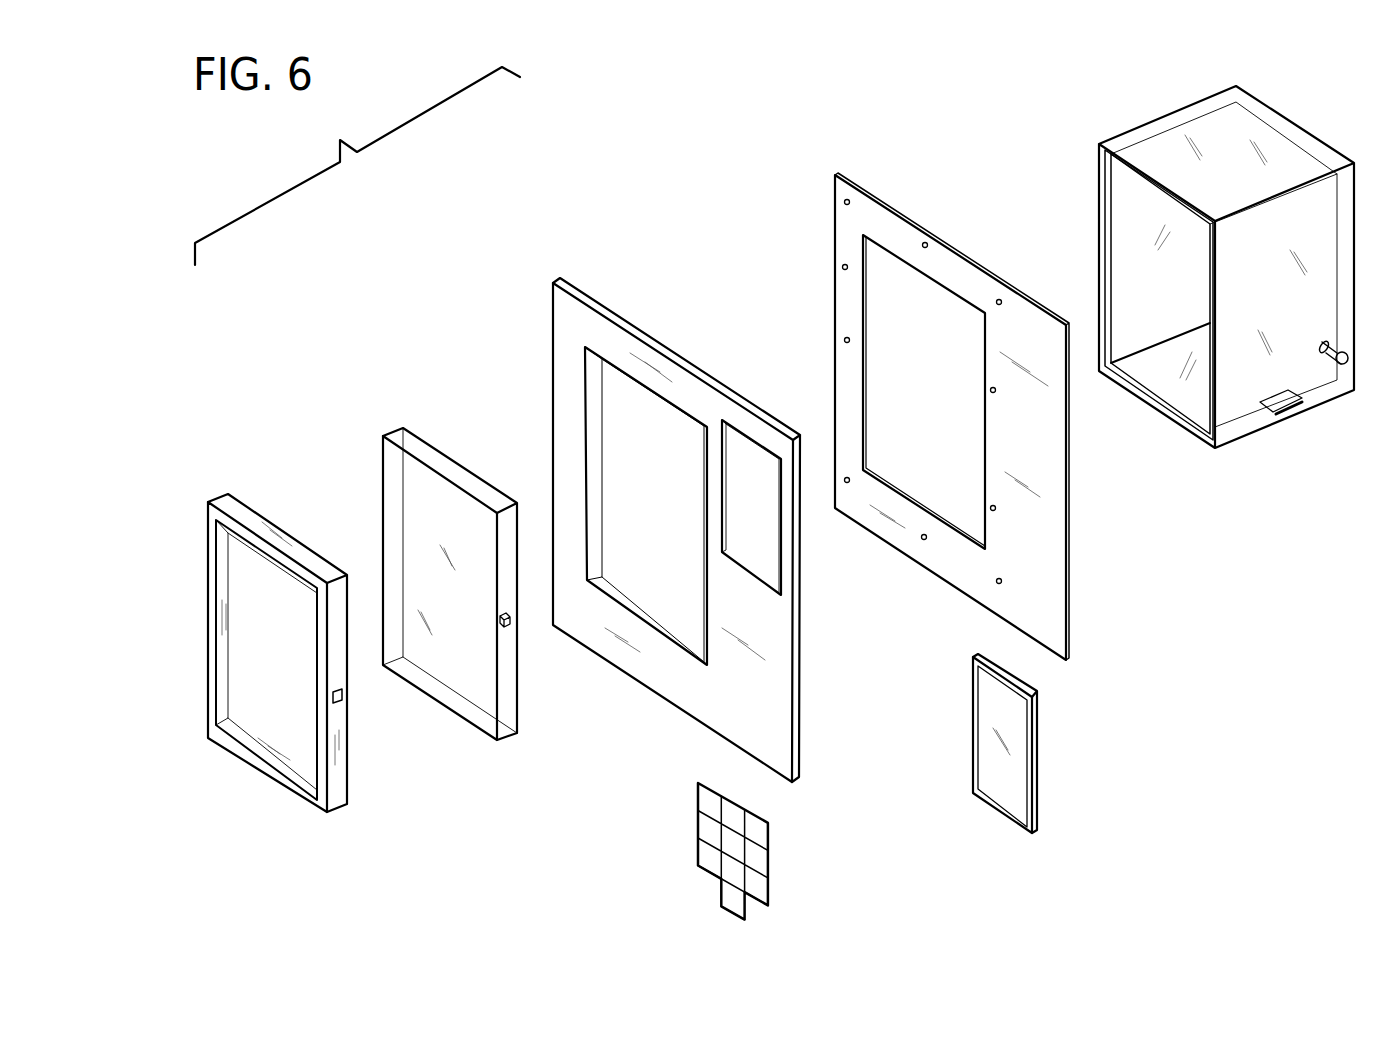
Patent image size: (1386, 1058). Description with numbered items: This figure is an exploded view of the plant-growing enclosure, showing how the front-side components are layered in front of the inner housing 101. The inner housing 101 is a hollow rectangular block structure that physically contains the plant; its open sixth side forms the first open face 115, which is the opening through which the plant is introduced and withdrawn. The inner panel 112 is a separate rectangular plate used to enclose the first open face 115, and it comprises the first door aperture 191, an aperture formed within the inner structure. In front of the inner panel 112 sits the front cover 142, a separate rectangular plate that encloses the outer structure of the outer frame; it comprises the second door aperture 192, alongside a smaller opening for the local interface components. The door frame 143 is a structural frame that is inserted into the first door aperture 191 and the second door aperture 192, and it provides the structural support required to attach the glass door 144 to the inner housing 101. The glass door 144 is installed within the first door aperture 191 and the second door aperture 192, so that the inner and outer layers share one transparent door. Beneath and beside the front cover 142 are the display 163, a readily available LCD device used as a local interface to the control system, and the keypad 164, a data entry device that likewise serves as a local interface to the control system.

The inner housing 101 is at (1226, 267).
The inner panel 112 is at (952, 380).
The first open face 115 is at (1152, 236).
The front cover 142 is at (676, 498).
The door frame 143 is at (293, 543).
The glass door 144 is at (443, 508).
The display 163 is at (1035, 768).
The keypad 164 is at (768, 870).
The first door aperture 191 is at (919, 336).
The second door aperture 192 is at (642, 453).